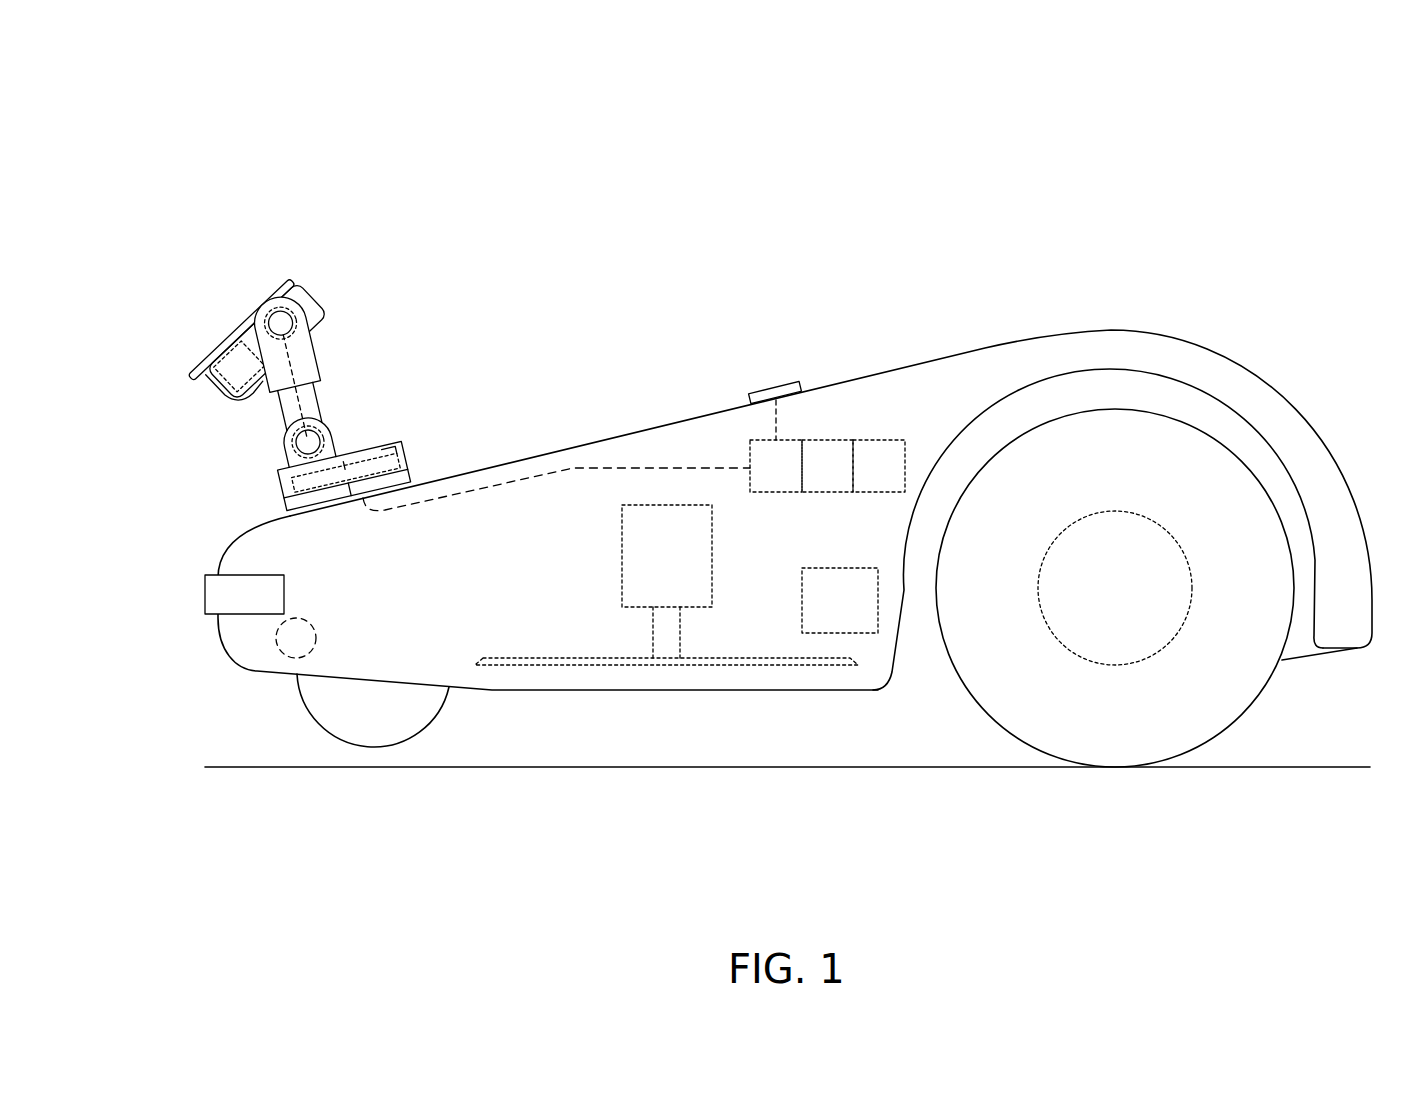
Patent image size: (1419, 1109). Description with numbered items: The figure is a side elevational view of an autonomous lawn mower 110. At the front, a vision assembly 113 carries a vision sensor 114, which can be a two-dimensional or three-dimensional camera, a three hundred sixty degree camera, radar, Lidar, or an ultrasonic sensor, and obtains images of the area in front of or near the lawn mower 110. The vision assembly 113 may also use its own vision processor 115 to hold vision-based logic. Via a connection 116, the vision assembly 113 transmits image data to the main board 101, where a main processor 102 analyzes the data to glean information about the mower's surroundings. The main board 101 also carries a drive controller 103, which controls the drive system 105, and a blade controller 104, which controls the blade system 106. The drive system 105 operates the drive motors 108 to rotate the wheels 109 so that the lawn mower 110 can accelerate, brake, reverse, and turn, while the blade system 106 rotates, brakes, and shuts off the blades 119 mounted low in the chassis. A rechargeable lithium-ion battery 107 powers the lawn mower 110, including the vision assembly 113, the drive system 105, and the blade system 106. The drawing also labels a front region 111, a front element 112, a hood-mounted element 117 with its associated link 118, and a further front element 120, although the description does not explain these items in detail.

The main board 101 is at (852, 468).
The main processor 102 is at (777, 493).
The drive controller 103 is at (826, 493).
The blade controller 104 is at (877, 493).
The drive system 105 is at (1302, 690).
The blade system 106 is at (579, 534).
The battery 107 is at (802, 598).
The drive motors 108 is at (1117, 510).
The wheels 109 is at (1115, 588).
The lawn mower 110 is at (252, 138).
The front end 111 is at (178, 585).
The front sensor 112 is at (244, 594).
The vision assembly 113 is at (231, 268).
The vision sensor 114 is at (222, 388).
The vision processor 115 is at (280, 487).
The connection 116 is at (652, 468).
The hood sensor 117 is at (787, 382).
The sensor connection 118 is at (777, 421).
The blades 119 is at (527, 657).
The front sensor 120 is at (318, 639).